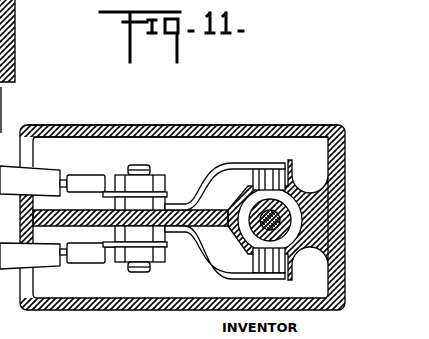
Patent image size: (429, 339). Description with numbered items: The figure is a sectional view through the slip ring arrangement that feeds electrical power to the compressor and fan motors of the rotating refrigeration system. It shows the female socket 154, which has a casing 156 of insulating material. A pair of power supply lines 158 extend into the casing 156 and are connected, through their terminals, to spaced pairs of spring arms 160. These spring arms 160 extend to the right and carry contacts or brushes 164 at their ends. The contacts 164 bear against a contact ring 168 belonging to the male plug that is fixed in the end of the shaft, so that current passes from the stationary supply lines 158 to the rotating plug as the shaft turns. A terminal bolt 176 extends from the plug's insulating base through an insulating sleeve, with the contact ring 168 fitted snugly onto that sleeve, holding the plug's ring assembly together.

The female socket 154 is at (288, 124).
The casing 156 is at (106, 127).
The power supply lines 158 is at (44, 262).
The spring arms 160 is at (206, 182).
The contacts or brushes 164 is at (278, 264).
The contact ring 168 is at (280, 222).
The terminal bolt 176 is at (221, 232).